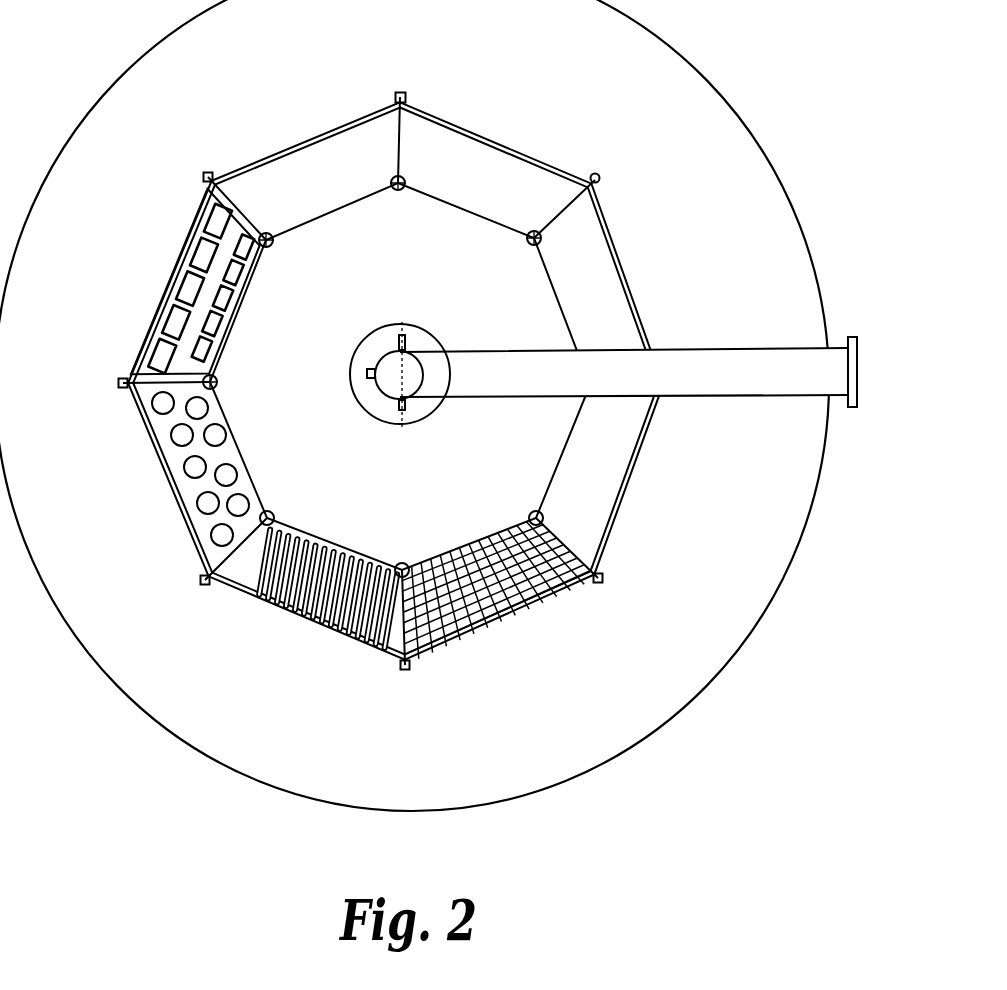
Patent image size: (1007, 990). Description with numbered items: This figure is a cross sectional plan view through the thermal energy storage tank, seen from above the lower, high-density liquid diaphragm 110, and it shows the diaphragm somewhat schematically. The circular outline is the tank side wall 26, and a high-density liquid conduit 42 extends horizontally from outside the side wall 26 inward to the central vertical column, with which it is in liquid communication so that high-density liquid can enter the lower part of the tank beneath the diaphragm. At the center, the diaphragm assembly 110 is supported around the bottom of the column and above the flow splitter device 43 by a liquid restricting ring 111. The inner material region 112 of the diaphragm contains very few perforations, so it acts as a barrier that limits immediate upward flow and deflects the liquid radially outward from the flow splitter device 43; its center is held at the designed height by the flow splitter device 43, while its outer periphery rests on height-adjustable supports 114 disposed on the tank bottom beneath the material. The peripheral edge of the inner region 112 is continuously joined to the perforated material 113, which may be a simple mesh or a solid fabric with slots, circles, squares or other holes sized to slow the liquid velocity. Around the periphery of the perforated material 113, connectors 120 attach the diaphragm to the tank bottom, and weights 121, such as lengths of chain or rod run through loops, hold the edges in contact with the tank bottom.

The tank side wall 26 is at (705, 70).
The high-density liquid conduit 42 is at (856, 337).
The flow splitter device 43 is at (390, 417).
The lower, high-density liquid diaphragm 110 is at (590, 482).
The liquid restricting ring 111 is at (352, 362).
The inner material region 112 is at (527, 427).
The perforated material 113 is at (307, 597).
The supports 114 is at (397, 192).
The connectors 120 is at (404, 96).
The weights 121 is at (500, 137).